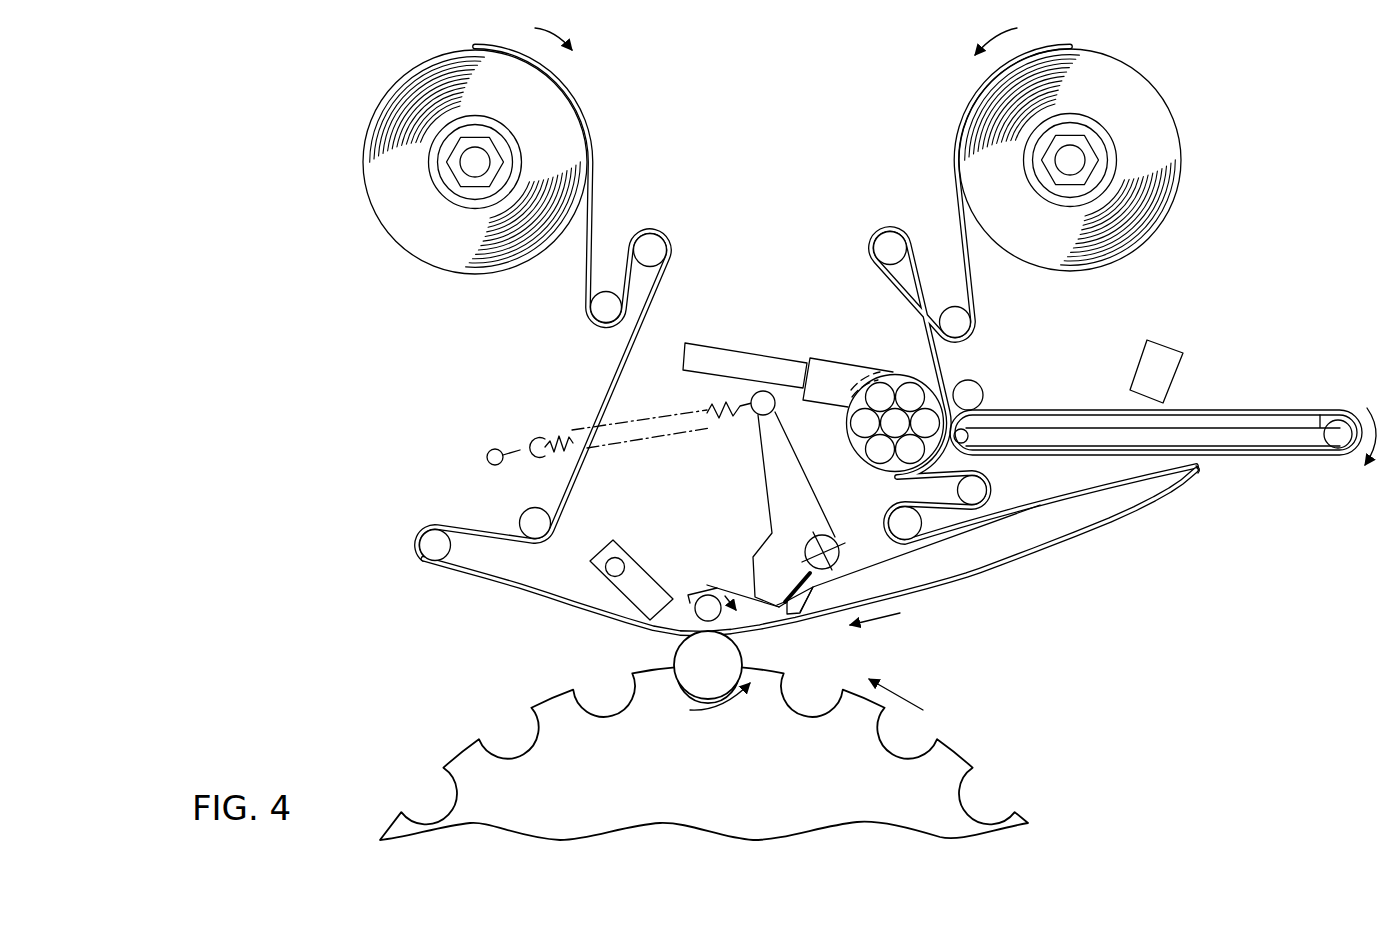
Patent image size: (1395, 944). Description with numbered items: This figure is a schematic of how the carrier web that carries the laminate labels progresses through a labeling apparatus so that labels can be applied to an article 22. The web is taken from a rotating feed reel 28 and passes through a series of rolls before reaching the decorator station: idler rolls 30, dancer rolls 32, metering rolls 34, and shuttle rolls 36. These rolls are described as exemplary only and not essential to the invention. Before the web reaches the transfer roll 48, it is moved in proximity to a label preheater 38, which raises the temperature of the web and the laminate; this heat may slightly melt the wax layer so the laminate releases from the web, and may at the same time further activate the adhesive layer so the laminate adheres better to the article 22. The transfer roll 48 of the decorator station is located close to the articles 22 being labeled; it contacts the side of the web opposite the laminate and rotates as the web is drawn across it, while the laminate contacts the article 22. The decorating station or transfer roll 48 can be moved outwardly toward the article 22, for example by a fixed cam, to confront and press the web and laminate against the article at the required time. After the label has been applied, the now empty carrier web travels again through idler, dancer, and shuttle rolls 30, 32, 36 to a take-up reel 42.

The article 22 is at (672, 676).
The feed reel 28 is at (1173, 142).
The idler rolls 30 is at (592, 312).
The dancer rolls 32 is at (650, 238).
The metering rolls 34 is at (870, 361).
The shuttle rolls 36 is at (422, 546).
The label preheater 38 is at (1009, 551).
The take-up reel 42 is at (380, 174).
The transfer roll 48 is at (708, 596).